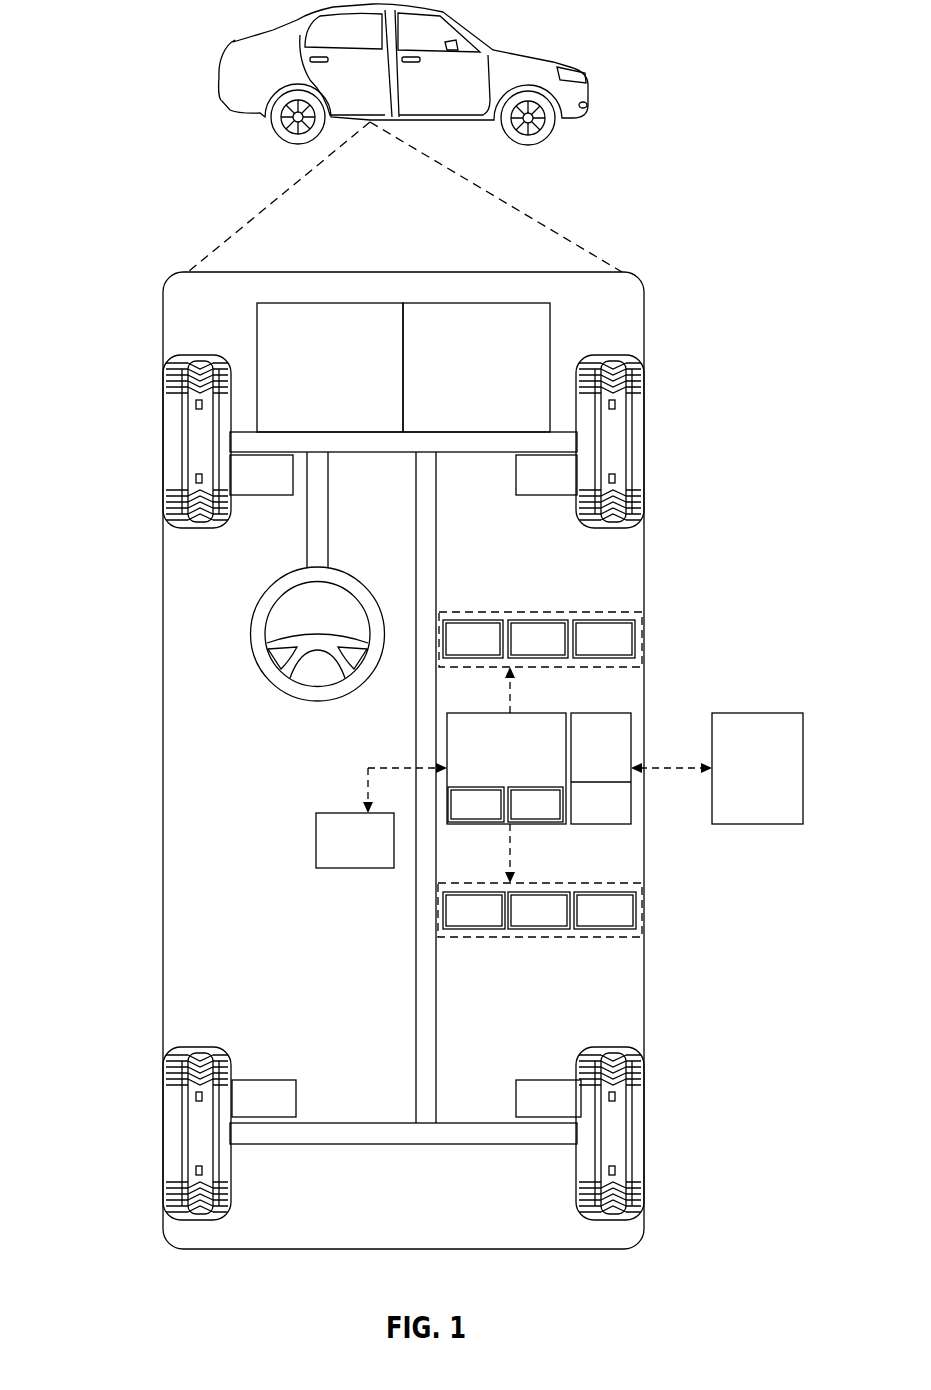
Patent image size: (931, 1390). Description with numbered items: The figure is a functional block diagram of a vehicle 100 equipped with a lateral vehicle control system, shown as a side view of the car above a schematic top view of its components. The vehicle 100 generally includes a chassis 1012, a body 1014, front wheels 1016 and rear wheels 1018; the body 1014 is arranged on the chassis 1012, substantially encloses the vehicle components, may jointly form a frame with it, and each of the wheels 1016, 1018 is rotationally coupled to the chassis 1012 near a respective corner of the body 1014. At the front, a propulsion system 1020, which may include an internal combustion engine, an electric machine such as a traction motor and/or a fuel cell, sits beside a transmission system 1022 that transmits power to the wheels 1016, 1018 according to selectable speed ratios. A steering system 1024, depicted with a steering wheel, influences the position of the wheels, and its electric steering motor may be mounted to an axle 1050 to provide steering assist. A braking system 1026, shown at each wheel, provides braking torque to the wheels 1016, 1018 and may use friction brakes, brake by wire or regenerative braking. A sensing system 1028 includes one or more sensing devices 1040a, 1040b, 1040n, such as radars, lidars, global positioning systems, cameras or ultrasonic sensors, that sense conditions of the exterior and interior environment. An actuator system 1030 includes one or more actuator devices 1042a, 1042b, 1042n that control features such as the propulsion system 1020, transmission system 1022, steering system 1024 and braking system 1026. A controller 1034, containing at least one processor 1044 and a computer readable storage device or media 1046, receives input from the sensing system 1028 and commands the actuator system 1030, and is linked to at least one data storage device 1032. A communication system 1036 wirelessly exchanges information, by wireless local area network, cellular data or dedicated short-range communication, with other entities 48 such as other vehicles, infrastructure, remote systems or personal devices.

The vehicle 100 is at (221, 57).
The chassis 1012 is at (418, 1030).
The body 1014 is at (163, 840).
The front wheels 1016 is at (168, 441).
The rear wheels 1018 is at (168, 1135).
The propulsion system 1020 is at (358, 386).
The transmission system 1022 is at (505, 386).
The steering system 1024 is at (334, 486).
The braking system 1026 is at (288, 490).
The sensing system 1028 is at (523, 610).
The actuator system 1030 is at (615, 882).
The data storage device 1032 is at (382, 855).
The controller 1034 is at (536, 768).
The communication system 1036 is at (601, 768).
The sensing device 1040a is at (473, 639).
The sensing device 1040b is at (538, 639).
The sensing device 1040n is at (604, 639).
The actuator device 1042a is at (474, 910).
The actuator device 1042b is at (539, 910).
The actuator device 1042n is at (605, 910).
The processor 1044 is at (476, 804).
The computer readable storage device or media 1046 is at (535, 804).
The axle 1050 is at (490, 443).
The other entities 48 is at (771, 784).